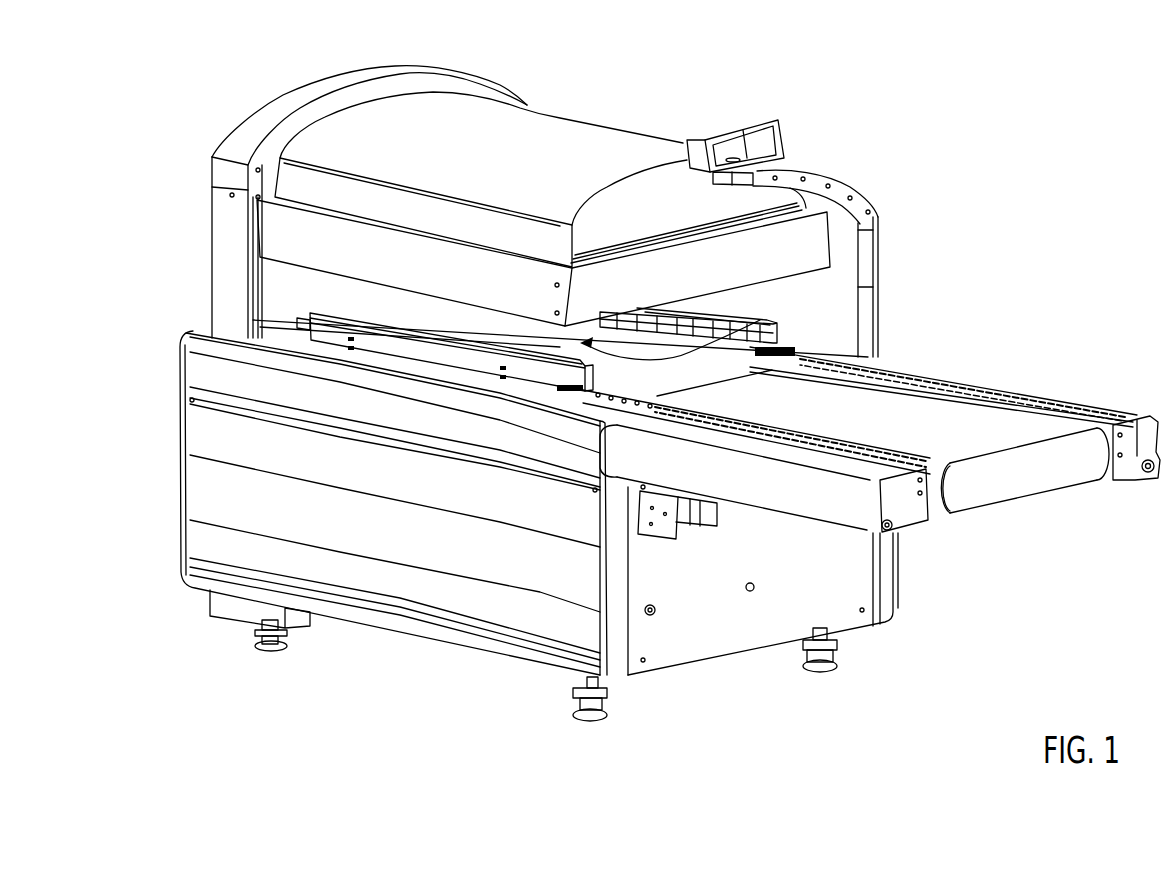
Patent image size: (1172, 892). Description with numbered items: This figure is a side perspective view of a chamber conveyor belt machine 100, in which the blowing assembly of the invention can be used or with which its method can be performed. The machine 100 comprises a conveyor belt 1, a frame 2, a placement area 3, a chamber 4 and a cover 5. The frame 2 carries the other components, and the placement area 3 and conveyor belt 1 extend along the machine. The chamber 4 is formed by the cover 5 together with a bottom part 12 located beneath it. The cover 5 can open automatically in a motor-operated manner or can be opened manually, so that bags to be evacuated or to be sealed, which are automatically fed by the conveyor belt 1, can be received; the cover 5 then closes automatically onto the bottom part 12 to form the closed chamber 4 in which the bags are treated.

The chamber conveyor belt machine 100 is at (858, 130).
The conveyor belt 1 is at (898, 340).
The frame 2 is at (890, 583).
The placement area 3 is at (913, 408).
The chamber 4 is at (747, 324).
The cover 5 is at (603, 135).
The bottom part 12 is at (397, 318).